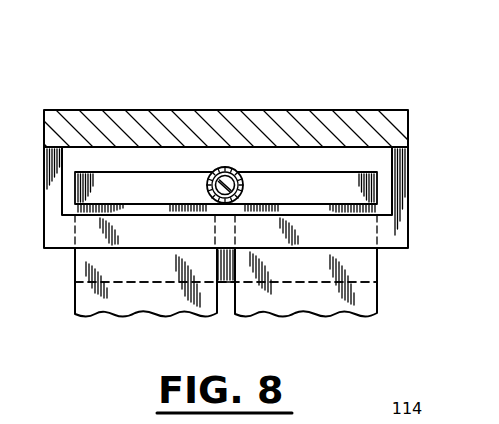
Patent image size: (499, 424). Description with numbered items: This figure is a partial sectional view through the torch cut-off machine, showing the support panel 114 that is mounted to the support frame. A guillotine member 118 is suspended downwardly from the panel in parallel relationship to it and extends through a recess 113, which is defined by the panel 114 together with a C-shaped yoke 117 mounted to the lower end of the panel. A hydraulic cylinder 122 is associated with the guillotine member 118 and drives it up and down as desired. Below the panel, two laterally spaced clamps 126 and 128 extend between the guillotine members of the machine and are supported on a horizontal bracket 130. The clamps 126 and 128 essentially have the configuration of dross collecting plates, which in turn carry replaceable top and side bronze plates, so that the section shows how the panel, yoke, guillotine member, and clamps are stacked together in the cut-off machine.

The support panel 114 is at (370, 106).
The recess 113 is at (392, 171).
The C-shaped yoke 117 is at (402, 228).
The guillotine member 118 is at (113, 180).
The hydraulic cylinder 122 is at (231, 168).
The clamp 126 is at (112, 312).
The clamp 128 is at (337, 311).
The horizontal bracket 130 is at (360, 280).